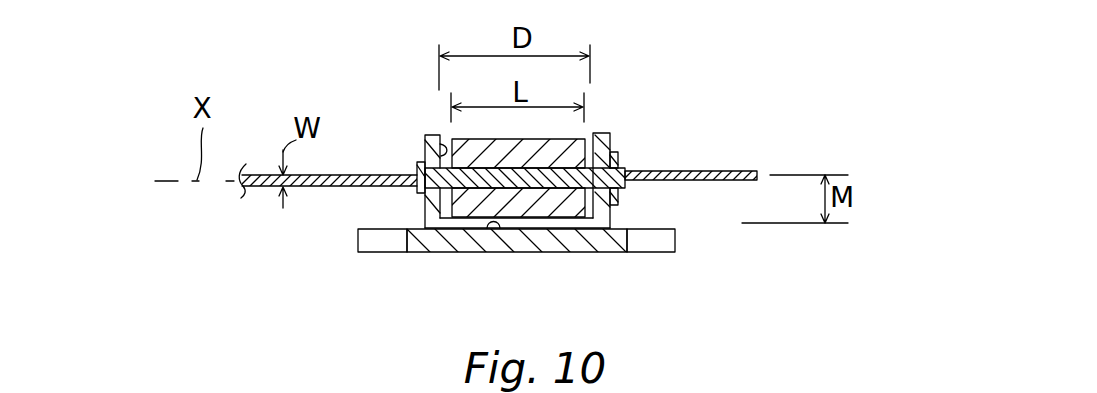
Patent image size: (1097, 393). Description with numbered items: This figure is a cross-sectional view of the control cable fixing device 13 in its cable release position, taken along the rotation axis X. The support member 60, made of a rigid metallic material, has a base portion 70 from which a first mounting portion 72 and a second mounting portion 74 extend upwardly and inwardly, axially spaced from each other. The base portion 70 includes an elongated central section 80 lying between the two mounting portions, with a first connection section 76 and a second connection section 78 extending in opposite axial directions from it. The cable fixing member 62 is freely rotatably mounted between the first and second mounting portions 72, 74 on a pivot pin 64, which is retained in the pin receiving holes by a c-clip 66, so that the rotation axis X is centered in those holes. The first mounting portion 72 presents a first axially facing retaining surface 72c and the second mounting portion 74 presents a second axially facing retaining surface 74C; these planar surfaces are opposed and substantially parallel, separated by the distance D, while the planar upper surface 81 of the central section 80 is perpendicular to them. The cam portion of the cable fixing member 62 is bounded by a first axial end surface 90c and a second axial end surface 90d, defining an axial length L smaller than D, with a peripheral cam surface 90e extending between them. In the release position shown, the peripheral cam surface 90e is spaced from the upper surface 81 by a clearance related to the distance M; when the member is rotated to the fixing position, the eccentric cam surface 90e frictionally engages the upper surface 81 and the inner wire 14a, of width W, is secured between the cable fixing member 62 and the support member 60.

The control cable fixing device 13 is at (664, 49).
The inner wire 14a is at (262, 188).
The support member 60 is at (622, 125).
The cable fixing member 62 is at (590, 134).
The pivot pin 64 is at (415, 193).
The c-clip 66 is at (690, 172).
The base portion 70 is at (345, 248).
The first mounting portion 72 is at (612, 142).
The first axially facing retaining surface 72c is at (612, 219).
The second mounting portion 74 is at (432, 134).
The second axially facing retaining surface 74C is at (425, 145).
The first connection section 76 is at (658, 245).
The second connection section 78 is at (385, 247).
The central section 80 is at (552, 245).
The upper surface 81 is at (497, 228).
The first axial end surface 90c is at (619, 199).
The second axial end surface 90d is at (445, 210).
The peripheral cam surface 90e is at (589, 213).